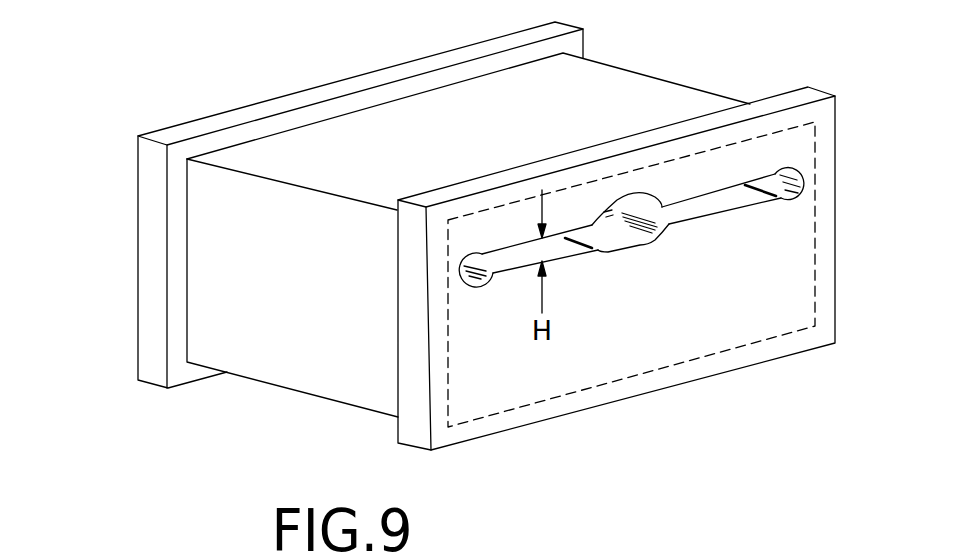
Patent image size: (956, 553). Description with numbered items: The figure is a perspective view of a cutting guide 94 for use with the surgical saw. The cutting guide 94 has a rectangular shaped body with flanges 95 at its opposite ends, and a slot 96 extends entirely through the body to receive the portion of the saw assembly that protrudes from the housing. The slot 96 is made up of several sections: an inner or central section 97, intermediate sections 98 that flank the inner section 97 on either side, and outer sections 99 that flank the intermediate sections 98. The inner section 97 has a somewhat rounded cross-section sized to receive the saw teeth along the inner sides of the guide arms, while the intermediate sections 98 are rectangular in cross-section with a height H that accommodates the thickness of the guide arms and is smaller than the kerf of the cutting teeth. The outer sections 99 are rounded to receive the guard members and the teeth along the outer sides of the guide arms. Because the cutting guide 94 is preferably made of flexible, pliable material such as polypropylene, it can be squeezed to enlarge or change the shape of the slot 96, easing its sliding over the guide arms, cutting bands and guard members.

The cutting guide 94 is at (279, 407).
The flanges 95 is at (207, 127).
The slot 96 is at (593, 237).
The inner or central section 97 is at (622, 237).
The intermediate sections 98 is at (517, 253).
The outer sections 99 is at (477, 278).